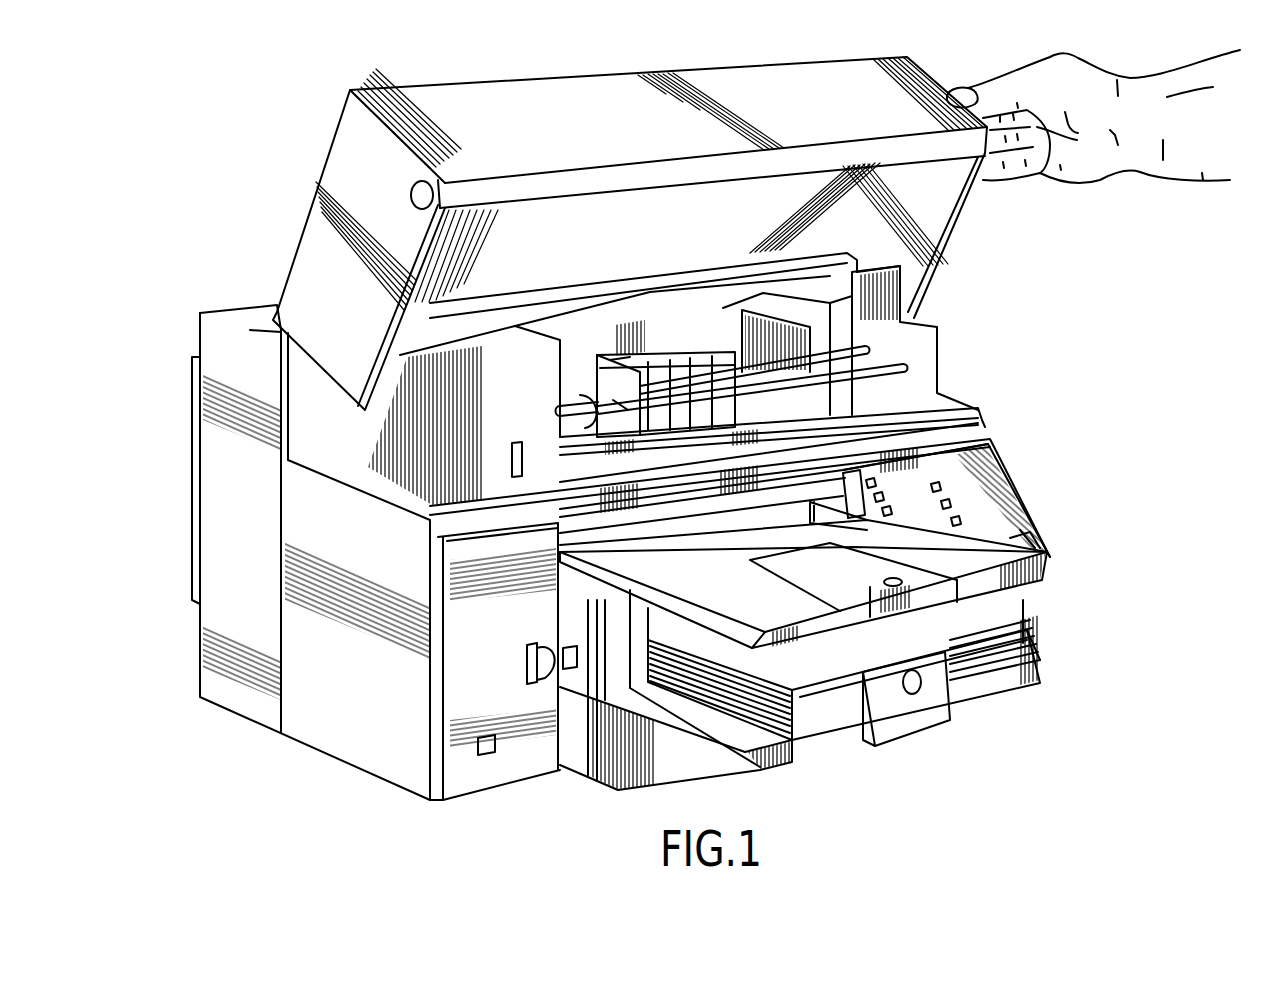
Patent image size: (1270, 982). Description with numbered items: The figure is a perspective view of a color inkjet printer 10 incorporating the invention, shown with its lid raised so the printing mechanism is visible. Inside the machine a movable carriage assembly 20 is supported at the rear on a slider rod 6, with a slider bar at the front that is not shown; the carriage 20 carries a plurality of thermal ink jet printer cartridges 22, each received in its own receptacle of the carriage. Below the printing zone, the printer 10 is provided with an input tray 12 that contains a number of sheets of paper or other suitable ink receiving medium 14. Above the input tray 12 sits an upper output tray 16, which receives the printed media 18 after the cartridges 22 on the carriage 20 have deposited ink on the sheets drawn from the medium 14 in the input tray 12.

The color inkjet printer 10 is at (1105, 371).
The slider rod 6 is at (903, 368).
The input tray 12 is at (735, 745).
The ink receiving medium 14 is at (1022, 650).
The upper output tray 16 is at (1040, 542).
The printed media 18 is at (648, 556).
The movable carriage assembly 20 is at (560, 412).
The thermal ink jet printer cartridges 22 is at (640, 368).